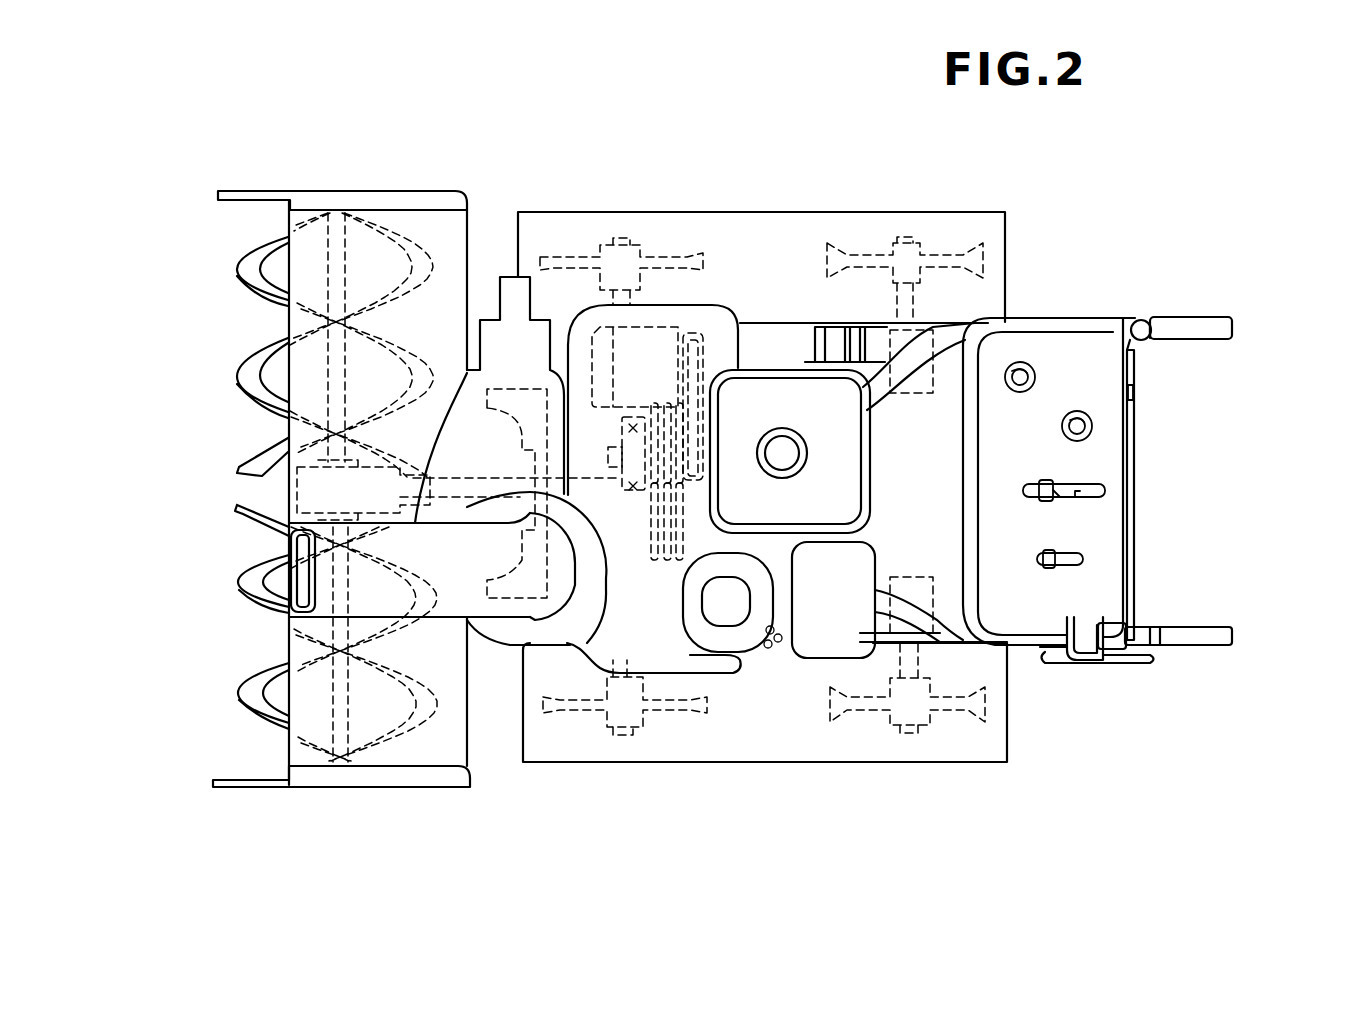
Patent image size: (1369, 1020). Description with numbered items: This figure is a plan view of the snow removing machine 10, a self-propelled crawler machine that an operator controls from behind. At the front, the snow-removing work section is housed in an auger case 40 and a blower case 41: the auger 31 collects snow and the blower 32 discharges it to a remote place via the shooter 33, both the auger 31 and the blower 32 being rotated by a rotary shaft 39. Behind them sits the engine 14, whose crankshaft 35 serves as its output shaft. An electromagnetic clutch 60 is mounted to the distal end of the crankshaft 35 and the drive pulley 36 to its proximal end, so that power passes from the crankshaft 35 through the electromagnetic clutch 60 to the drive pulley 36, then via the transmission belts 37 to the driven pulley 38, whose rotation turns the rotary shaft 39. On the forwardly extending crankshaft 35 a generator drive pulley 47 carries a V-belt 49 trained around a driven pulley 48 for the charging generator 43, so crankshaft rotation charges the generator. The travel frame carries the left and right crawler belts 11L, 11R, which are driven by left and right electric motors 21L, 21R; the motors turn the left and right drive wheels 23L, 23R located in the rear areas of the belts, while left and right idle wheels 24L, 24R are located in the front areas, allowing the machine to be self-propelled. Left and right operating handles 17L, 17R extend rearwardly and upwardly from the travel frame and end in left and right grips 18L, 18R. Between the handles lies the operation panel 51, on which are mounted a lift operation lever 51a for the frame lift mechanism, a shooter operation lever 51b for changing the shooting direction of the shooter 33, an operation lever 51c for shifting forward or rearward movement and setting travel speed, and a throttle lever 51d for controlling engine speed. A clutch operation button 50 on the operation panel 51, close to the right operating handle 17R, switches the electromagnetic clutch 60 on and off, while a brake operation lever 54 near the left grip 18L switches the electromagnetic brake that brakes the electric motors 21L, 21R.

The snow removing machine 10 is at (1104, 146).
The right crawler belt 11R is at (771, 220).
The left crawler belt 11L is at (783, 743).
The engine 14 is at (766, 357).
The right operating handle 17R is at (1140, 317).
The left operating handle 17L is at (1097, 637).
The right grip 18R is at (1223, 323).
The left grip 18L is at (1223, 638).
The right electric motor 21R is at (960, 330).
The left electric motor 21L is at (958, 640).
The right drive wheel 23R is at (867, 255).
The left drive wheel 23L is at (882, 712).
The right idle wheel 24R is at (580, 255).
The left idle wheel 24L is at (580, 710).
The auger 31 is at (248, 235).
The blower 32 is at (522, 397).
The shooter 33 is at (382, 598).
The crankshaft 35 is at (700, 430).
The drive pulley 36 is at (718, 305).
The transmission belts 37 is at (660, 565).
The driven pulley 38 is at (700, 570).
The rotary shaft 39 is at (460, 490).
The auger case 40 is at (392, 222).
The blower case 41 is at (462, 385).
The charging generator 43 is at (623, 347).
The generator drive pulley 47 is at (705, 495).
The driven pulley 48 is at (660, 405).
The V-belt 49 is at (690, 335).
The clutch operation button 50 is at (1133, 392).
The operation panel 51 is at (1057, 330).
The lift operation lever 51a is at (1070, 412).
The shooter operation lever 51b is at (1018, 363).
The operation lever 51c is at (1043, 484).
The throttle lever 51d is at (1053, 548).
The brake operation lever 54 is at (1153, 633).
The electromagnetic clutch 60 is at (641, 512).